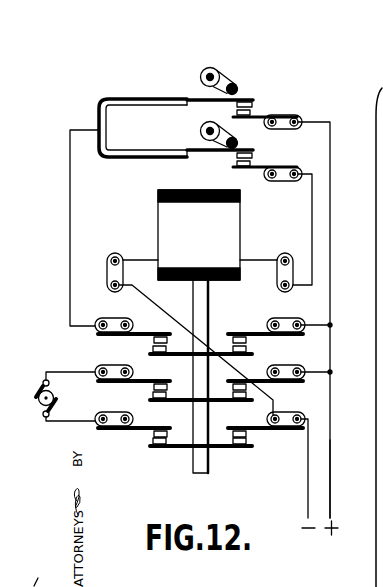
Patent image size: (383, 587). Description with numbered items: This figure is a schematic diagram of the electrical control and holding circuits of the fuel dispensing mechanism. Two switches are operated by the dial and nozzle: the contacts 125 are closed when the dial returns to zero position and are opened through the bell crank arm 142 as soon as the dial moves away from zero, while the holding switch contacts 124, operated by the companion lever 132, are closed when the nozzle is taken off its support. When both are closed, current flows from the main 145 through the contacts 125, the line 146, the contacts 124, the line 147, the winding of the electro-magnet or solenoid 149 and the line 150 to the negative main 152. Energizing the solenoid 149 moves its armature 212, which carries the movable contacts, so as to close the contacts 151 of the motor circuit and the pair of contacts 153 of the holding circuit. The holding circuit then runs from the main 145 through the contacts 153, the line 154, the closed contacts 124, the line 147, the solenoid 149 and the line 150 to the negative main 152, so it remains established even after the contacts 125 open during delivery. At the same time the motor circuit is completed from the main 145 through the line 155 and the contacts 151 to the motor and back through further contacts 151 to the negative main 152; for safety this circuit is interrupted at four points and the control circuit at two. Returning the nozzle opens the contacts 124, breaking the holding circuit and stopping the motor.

The line 146 is at (101, 99).
The switch actuating bell crank arm 142 is at (228, 79).
The contacts 125 is at (253, 103).
The roller 132 is at (204, 122).
The holding switch contacts 124 is at (253, 157).
The line 154 is at (75, 224).
The line 147 is at (310, 210).
The electro-magnet or solenoid 149 is at (200, 241).
The line 150 is at (162, 310).
The armature 212 is at (208, 465).
The holding circuit contacts 153 is at (148, 342).
The negative main 152 is at (147, 393).
The line 155 is at (315, 370).
The motor circuit contacts 151 is at (307, 472).
The main 145 is at (332, 465).